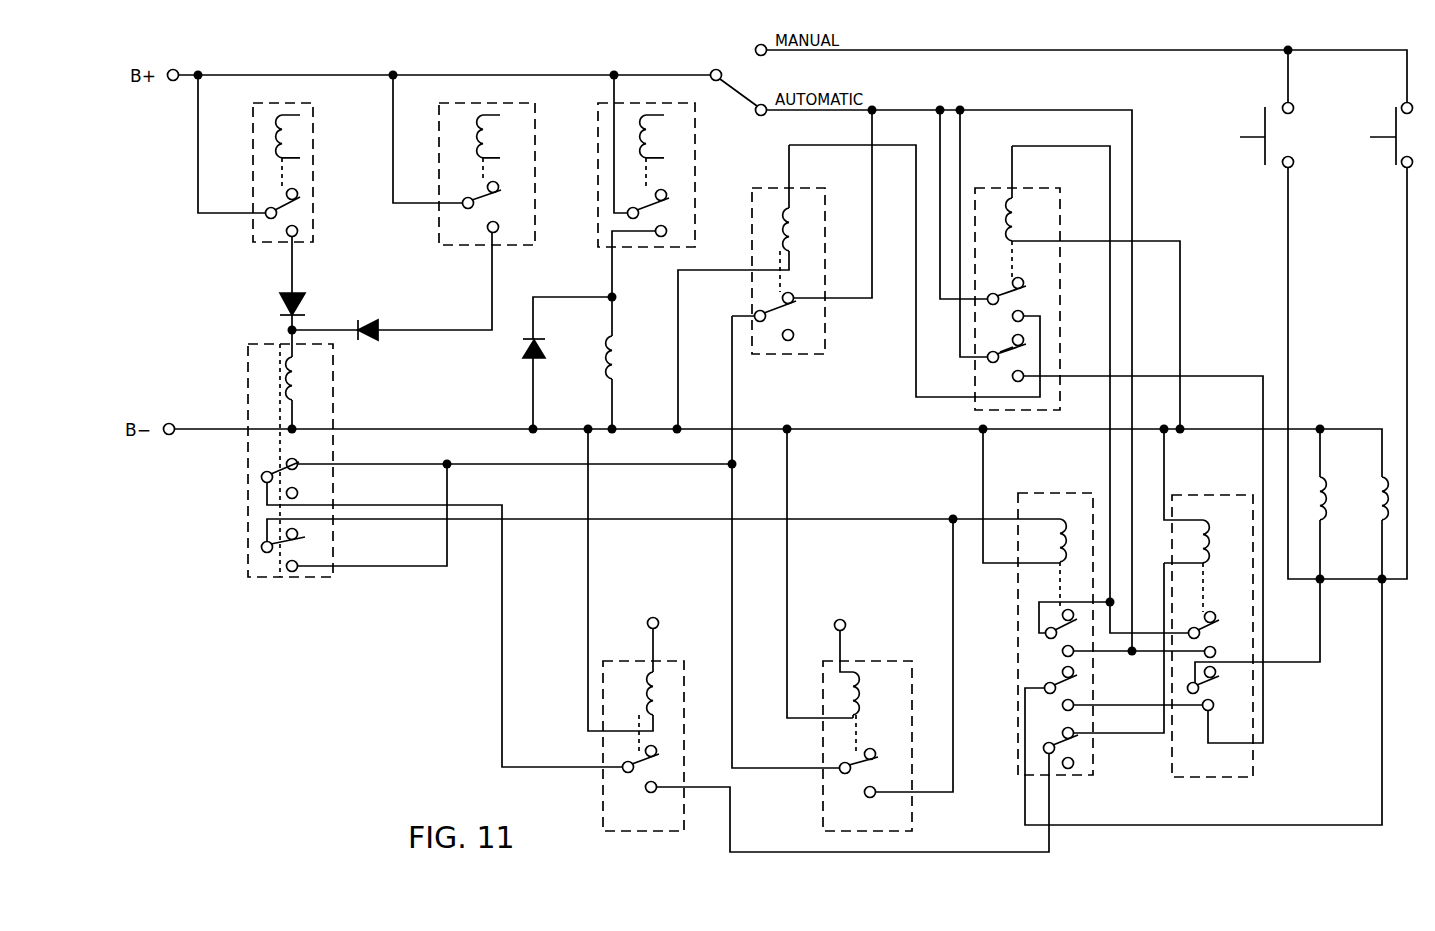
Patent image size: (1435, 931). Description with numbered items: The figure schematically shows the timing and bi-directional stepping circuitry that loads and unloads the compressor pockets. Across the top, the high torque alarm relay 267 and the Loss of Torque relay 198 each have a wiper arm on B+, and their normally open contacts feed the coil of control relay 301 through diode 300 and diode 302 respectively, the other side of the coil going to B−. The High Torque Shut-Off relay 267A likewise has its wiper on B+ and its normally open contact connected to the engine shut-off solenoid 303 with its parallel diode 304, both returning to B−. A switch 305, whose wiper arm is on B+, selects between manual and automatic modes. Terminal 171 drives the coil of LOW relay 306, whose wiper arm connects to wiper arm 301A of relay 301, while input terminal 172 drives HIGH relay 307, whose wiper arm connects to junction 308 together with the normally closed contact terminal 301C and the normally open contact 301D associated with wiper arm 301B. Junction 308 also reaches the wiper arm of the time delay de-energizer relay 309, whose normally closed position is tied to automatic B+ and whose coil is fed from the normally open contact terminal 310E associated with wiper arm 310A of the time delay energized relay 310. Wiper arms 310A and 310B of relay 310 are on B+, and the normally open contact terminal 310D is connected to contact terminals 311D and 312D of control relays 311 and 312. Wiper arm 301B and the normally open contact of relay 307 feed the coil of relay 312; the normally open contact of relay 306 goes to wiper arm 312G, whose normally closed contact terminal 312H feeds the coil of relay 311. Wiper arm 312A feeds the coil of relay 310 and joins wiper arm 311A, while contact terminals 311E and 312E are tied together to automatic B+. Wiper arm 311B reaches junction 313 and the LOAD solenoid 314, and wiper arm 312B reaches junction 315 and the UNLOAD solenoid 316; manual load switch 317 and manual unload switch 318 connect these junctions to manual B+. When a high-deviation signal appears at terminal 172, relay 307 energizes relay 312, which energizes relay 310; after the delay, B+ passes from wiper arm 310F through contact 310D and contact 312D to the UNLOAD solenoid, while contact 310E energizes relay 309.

The high torque alarm relay 267 is at (290, 127).
The Loss of Torque relay 198 is at (510, 127).
The High Torque Shut-Off relay 267A is at (668, 148).
The switch 305 is at (746, 89).
The time delay de-energizer relay 309 is at (776, 224).
The time delay energized relay 310 is at (1022, 212).
The wiper arm 310A is at (1000, 292).
The normally open contact terminal 310E is at (1026, 311).
The wiper arm 310F is at (1028, 338).
The normally open contact terminal 310D is at (1028, 370).
The wiper arm 310B is at (1012, 350).
The manual load switch 317 is at (1280, 130).
The manual unload switch 318 is at (1396, 163).
The diode 300 is at (306, 306).
The diode 302 is at (380, 326).
The control relay 301 is at (308, 382).
The normally closed contact terminal 301C is at (289, 459).
The wiper arm 301A is at (268, 472).
The wiper arm 301B is at (266, 543).
The normally open contact 301D is at (287, 566).
The engine shut-off solenoid 303 is at (598, 340).
The parallel diode 304 is at (520, 356).
The junction 308 is at (727, 468).
The terminal 171 is at (654, 612).
The input terminal 172 is at (841, 613).
The LOW relay 306 is at (623, 675).
The HIGH relay 307 is at (860, 675).
The control relay 312 is at (1055, 634).
The wiper arm 312A is at (1058, 638).
The normally open contact terminal 312E is at (1058, 654).
The wiper arm 312B is at (1042, 690).
The normally open contact terminal 312D is at (1073, 698).
The normally closed contact terminal 312H is at (1074, 728).
The wiper arm 312G is at (1072, 745).
The control relay 311 is at (1205, 565).
The wiper arm 311A is at (1198, 625).
The normally open contact terminal 311E is at (1212, 650).
The wiper arm 311B is at (1213, 680).
The normally open contact terminal 311D is at (1205, 712).
The junction 313 is at (1320, 586).
The LOAD solenoid 314 is at (1324, 482).
The junction 315 is at (1380, 590).
The UNLOAD solenoid 316 is at (1385, 472).